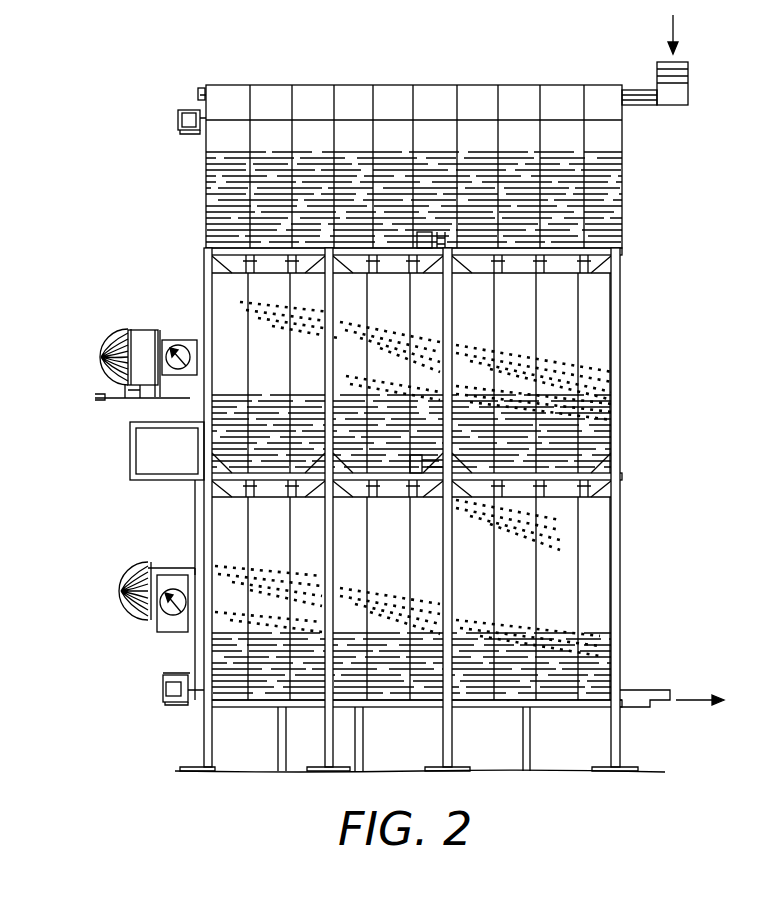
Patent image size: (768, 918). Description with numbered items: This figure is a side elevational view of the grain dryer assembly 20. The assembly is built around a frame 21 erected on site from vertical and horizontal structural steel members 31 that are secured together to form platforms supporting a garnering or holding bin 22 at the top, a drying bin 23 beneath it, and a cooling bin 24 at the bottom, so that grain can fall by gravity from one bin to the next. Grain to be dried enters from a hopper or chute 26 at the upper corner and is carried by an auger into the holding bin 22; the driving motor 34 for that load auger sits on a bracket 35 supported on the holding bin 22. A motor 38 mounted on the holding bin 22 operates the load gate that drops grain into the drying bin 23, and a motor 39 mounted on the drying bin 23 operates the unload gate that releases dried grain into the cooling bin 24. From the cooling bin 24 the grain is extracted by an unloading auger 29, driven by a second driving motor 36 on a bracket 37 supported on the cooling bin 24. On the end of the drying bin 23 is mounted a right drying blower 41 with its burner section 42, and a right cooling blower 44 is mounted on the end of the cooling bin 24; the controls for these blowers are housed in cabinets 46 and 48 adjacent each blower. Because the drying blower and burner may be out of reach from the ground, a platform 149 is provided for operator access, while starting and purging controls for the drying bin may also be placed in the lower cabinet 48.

The dryer assembly 20 is at (627, 392).
The frame 21 is at (212, 285).
The holding bin 22 is at (222, 170).
The drying bin 23 is at (258, 332).
The cooling bin 24 is at (215, 536).
The hopper or chute 26 is at (690, 93).
The unloading auger 29 is at (630, 690).
The horizontal structural steel members 31 is at (228, 235).
The driving motor 34 is at (180, 120).
The bracket 35 is at (188, 133).
The driving motor 36 is at (164, 688).
The bracket 37 is at (165, 705).
The motor 38 is at (427, 232).
The motor 39 is at (420, 455).
The right drying blower 41 is at (103, 339).
The burner section 42 is at (142, 338).
The right cooling blower 44 is at (122, 574).
The control cabinet 46 is at (180, 345).
The control cabinet 48 is at (165, 640).
The platform 149 is at (130, 450).